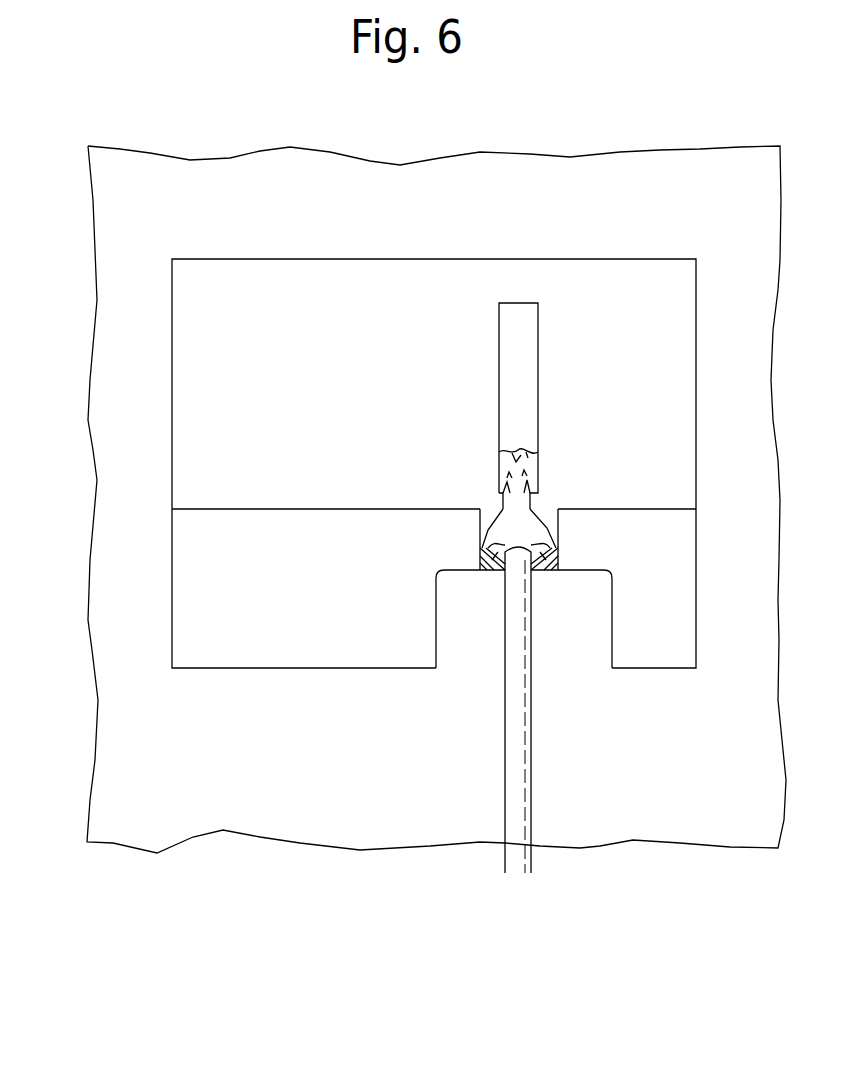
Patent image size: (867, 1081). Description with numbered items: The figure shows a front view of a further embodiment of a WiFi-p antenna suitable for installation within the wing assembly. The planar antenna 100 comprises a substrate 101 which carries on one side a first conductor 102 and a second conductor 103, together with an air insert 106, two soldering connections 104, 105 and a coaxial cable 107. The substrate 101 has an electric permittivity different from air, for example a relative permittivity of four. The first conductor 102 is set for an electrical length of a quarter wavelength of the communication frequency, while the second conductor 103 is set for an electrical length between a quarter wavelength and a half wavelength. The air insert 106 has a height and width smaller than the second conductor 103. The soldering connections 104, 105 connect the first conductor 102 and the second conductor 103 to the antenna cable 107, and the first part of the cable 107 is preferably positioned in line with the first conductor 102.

The planar antenna 100 is at (186, 222).
The substrate 101 is at (192, 312).
The first conductor 102 is at (538, 352).
The second conductor 103 is at (203, 567).
The soldering connection 104 is at (538, 473).
The soldering connection 105 is at (558, 537).
The air insert 106 is at (590, 633).
The coaxial cable 107 is at (531, 778).